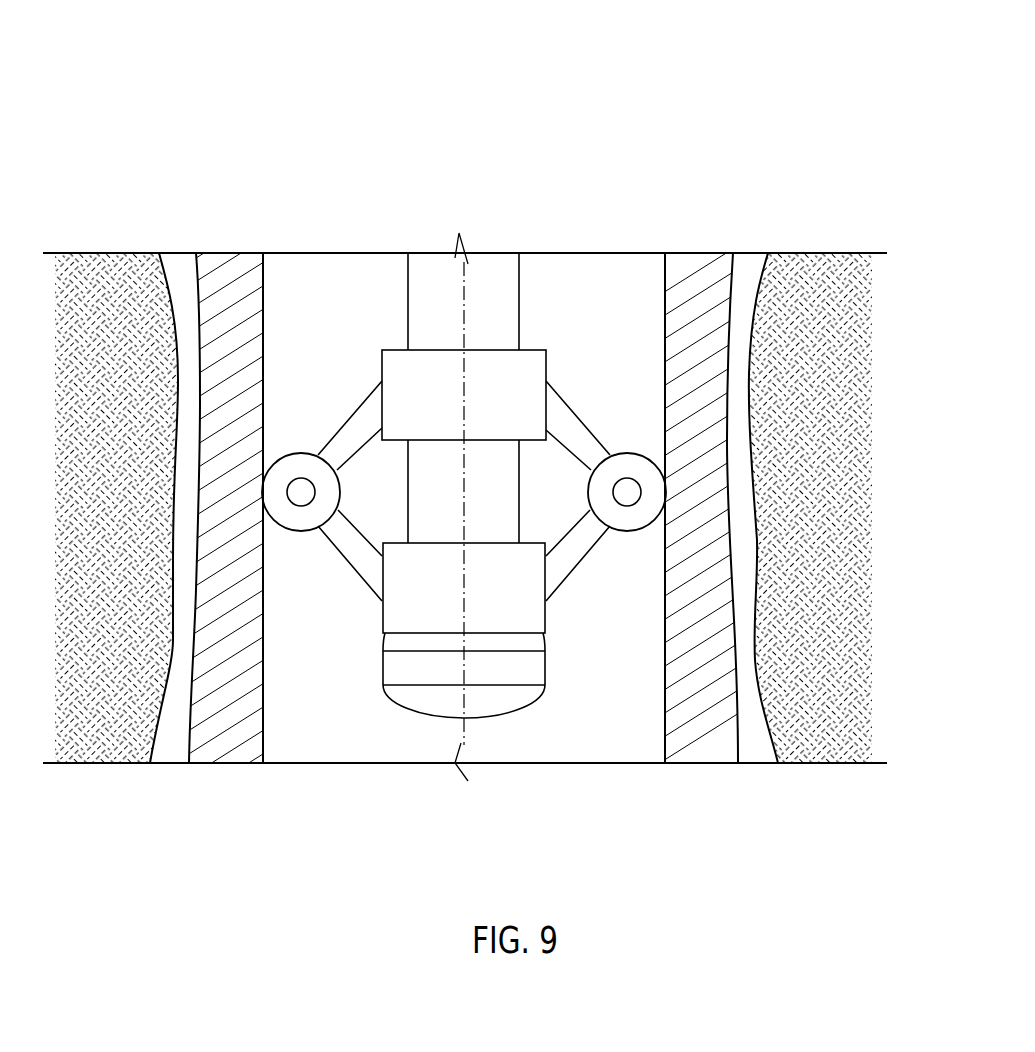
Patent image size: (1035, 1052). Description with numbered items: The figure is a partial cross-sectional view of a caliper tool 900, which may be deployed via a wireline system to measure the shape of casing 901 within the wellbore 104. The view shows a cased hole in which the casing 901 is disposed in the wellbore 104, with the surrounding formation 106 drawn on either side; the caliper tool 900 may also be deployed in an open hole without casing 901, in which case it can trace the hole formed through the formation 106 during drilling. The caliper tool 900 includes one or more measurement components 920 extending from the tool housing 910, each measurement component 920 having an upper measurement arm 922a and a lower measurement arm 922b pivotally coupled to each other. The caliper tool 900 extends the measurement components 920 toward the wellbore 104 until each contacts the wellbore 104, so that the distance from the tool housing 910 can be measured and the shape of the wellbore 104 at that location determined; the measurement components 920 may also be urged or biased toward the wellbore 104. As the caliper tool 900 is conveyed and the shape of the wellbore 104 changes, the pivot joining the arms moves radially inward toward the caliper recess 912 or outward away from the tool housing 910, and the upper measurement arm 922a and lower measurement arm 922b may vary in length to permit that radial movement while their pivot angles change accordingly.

The caliper tool 900 is at (940, 69).
The wellbore 104 is at (621, 146).
The formation 106 is at (843, 267).
The casing 901 is at (669, 273).
The tool housing 910 is at (519, 270).
The caliper recess 912 is at (520, 462).
The measurement component 920 is at (591, 559).
The upper measurement arm 922a is at (562, 397).
The lower measurement arm 922b is at (563, 588).